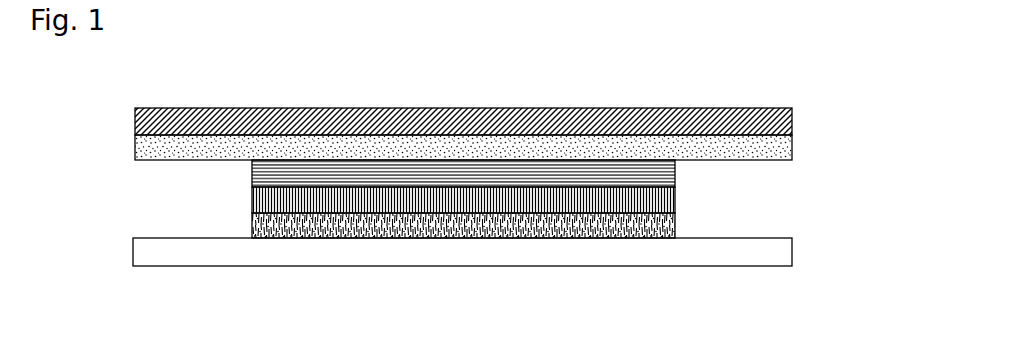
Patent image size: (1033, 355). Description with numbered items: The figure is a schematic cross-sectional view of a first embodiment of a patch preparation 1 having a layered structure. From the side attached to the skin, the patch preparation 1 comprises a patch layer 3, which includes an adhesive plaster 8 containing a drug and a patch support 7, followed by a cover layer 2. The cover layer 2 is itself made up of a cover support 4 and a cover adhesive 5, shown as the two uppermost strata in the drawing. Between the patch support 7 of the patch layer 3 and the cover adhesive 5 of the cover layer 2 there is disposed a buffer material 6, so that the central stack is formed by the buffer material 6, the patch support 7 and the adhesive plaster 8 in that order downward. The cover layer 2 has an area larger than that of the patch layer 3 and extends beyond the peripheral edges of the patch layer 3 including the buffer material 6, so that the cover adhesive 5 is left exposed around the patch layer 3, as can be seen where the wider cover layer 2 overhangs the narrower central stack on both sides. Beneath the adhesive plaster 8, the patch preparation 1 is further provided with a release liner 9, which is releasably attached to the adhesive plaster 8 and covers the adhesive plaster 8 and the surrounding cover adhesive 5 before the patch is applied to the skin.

The patch preparation 1 is at (511, 162).
The cover layer 2 is at (512, 134).
The patch layer 3 is at (554, 199).
The cover support 4 is at (792, 118).
The cover adhesive 5 is at (786, 148).
The buffer material 6 is at (675, 177).
The patch support 7 is at (675, 199).
The adhesive plaster 8 is at (675, 224).
The release liner 9 is at (786, 255).